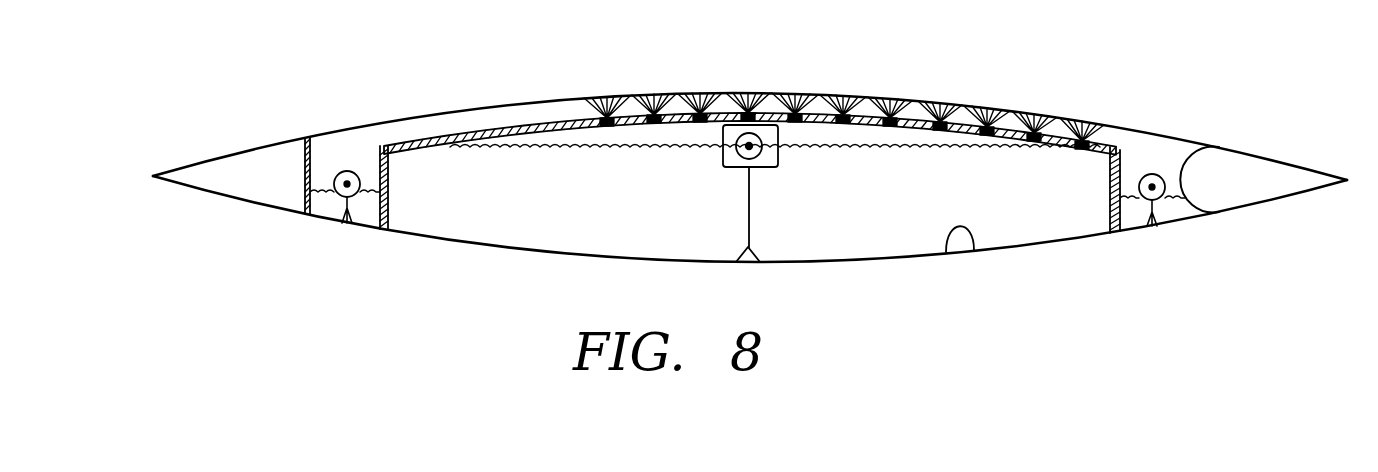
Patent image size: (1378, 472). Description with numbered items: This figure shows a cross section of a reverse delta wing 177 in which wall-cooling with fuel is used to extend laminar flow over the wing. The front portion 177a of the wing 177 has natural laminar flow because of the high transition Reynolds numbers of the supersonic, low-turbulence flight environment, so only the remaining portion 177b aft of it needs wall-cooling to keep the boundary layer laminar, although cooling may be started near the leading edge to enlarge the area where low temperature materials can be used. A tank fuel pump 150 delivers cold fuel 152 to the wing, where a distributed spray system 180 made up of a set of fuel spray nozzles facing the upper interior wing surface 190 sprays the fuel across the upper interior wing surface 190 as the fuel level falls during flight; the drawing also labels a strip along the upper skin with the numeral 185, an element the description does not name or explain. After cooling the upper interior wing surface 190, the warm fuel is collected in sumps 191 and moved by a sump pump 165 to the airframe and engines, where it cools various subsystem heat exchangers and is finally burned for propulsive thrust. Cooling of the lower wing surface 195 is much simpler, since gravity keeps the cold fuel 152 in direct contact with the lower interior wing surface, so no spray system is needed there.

The tank fuel pump 150 is at (740, 126).
The cold fuel 152 is at (677, 206).
The sump pump 165 is at (340, 197).
The reverse delta wing 177 is at (1263, 157).
The front portion of the wing 177a is at (573, 90).
The remaining portion of the wing aft of the NLF portion 177b is at (1113, 118).
The distributed spray system 180 is at (915, 138).
The heating strip 185 is at (992, 140).
The upper interior wing surface 190 is at (1113, 137).
The sumps 191 is at (372, 222).
The lower wing surface 195 is at (973, 250).